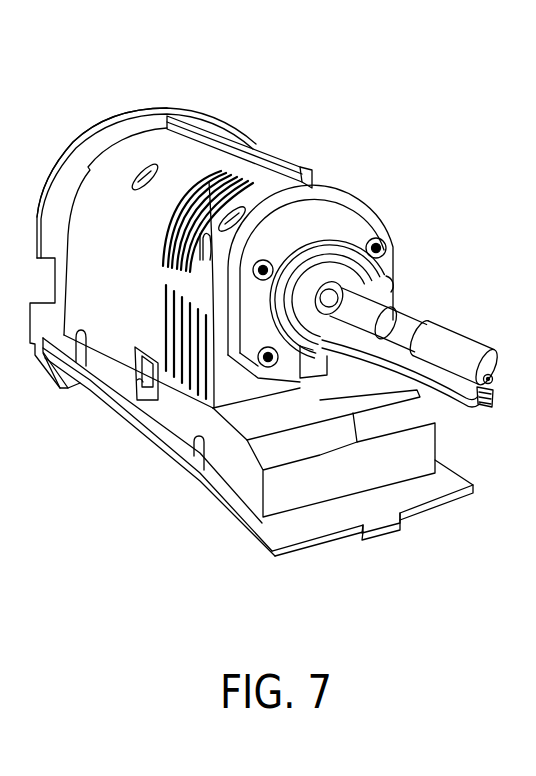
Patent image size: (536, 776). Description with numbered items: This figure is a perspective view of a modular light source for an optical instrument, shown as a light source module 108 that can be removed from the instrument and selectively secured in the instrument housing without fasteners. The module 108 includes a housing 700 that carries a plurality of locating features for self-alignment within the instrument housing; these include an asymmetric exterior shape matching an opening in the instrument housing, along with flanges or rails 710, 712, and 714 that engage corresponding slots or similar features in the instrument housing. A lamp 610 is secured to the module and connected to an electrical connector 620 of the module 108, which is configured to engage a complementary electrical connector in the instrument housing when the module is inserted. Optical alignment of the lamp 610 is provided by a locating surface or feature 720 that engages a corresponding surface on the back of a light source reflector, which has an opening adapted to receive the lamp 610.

The light source module 108 is at (113, 191).
The flange or rail 712 is at (145, 117).
The flange or rail 714 is at (268, 147).
The locating surface or feature 720 is at (327, 247).
The lamp 610 is at (405, 318).
The electrical connector 620 is at (140, 383).
The housing 700 is at (90, 335).
The flange or rail 710 is at (275, 530).